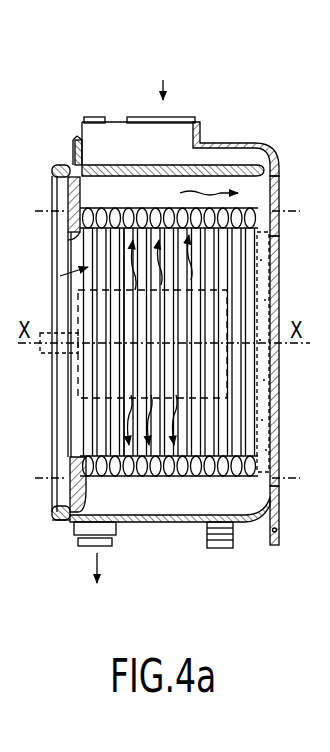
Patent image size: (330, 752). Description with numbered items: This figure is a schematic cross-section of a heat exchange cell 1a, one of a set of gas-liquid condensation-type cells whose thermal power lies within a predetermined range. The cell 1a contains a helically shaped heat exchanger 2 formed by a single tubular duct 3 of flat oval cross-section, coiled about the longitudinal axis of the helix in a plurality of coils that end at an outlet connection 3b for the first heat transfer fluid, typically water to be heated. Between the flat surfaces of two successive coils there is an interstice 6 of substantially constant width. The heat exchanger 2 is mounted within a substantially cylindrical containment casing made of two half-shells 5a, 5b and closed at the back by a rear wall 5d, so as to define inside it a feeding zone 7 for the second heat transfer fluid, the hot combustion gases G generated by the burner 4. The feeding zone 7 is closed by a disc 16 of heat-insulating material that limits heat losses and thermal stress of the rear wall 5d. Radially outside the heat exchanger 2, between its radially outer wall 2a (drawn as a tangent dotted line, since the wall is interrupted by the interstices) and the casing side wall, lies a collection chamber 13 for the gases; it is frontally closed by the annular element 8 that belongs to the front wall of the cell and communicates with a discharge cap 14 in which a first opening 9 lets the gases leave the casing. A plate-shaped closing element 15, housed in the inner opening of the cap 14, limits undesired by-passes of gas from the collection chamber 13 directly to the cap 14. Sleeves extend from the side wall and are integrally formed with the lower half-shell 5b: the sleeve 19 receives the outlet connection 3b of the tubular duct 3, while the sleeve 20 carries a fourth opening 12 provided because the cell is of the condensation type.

The heat exchange cell 1a is at (42, 101).
The helically shaped heat exchanger 2 is at (108, 198).
The radially outer wall 2a is at (83, 146).
The first opening 9 is at (132, 181).
The flow of hot combustion gases G is at (162, 75).
The closing element 15 is at (172, 168).
The discharge cap 14 is at (218, 142).
The half-shell 5a is at (276, 166).
The rear wall 5d is at (278, 290).
The lower half-shell 5b is at (275, 510).
The tubular duct 3 is at (77, 240).
The feeding zone 7 is at (73, 274).
The burner 4 is at (78, 375).
The annular element 8 is at (55, 425).
The disc 16 is at (278, 374).
The collection chamber 13 is at (195, 512).
The interstice 6 is at (118, 478).
The sleeve 19 is at (68, 520).
The outlet connection 3b is at (110, 547).
The fourth opening 12 is at (216, 550).
The sleeve 20 is at (238, 525).